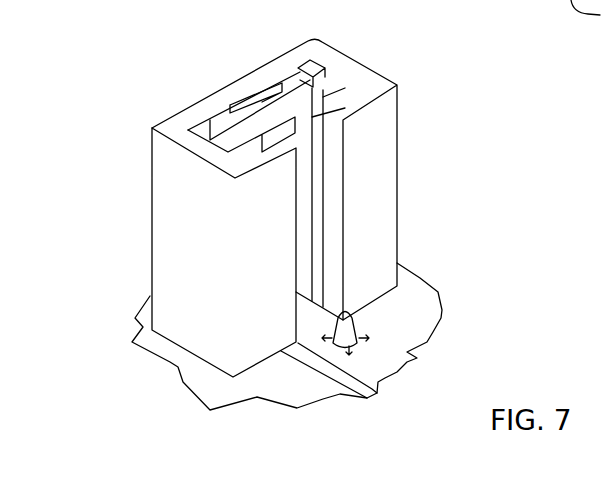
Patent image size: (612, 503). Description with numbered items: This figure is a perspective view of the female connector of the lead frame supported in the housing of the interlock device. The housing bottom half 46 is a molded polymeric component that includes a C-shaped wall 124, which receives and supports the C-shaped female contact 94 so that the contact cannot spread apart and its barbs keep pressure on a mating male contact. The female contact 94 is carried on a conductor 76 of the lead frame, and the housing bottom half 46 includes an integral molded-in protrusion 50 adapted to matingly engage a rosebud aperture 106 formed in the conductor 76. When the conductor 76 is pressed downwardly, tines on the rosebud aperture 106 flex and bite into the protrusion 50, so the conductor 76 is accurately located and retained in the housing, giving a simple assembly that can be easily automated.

The C-shaped wall 124 is at (160, 208).
The female contact 94 is at (292, 80).
The housing bottom half 46 is at (418, 288).
The conductor 76 is at (345, 377).
The protrusion 50 is at (352, 320).
The rosebud aperture 106 is at (388, 376).